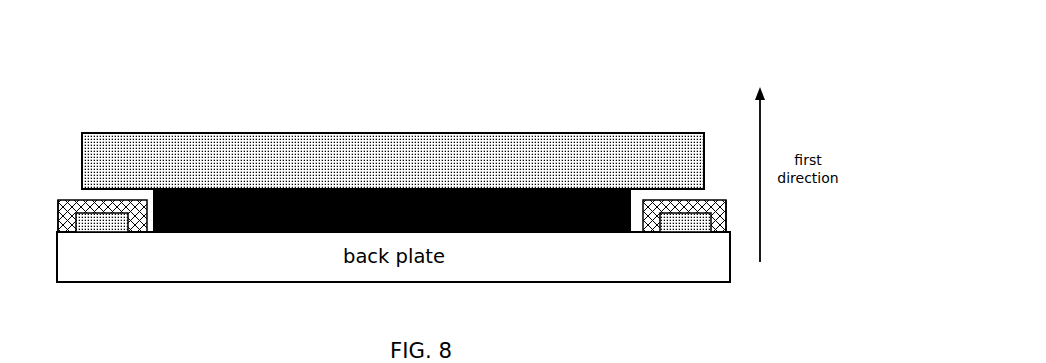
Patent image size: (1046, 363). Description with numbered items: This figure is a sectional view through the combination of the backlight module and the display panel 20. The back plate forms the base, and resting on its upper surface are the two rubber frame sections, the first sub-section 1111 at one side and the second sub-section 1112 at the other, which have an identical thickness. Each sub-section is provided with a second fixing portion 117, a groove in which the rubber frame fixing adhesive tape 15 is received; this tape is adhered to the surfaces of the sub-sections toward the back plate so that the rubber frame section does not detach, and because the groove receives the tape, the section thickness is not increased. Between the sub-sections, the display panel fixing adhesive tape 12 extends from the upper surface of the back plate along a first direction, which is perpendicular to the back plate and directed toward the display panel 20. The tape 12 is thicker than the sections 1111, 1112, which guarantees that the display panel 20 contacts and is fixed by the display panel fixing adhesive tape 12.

The display panel fixing adhesive tape 12 is at (331, 194).
The display panel 20 is at (458, 170).
The rubber frame fixing adhesive tape 15 is at (118, 222).
The second fixing portion 117 is at (98, 211).
The first sub-section 1111 is at (64, 200).
The second sub-section 1112 is at (725, 200).